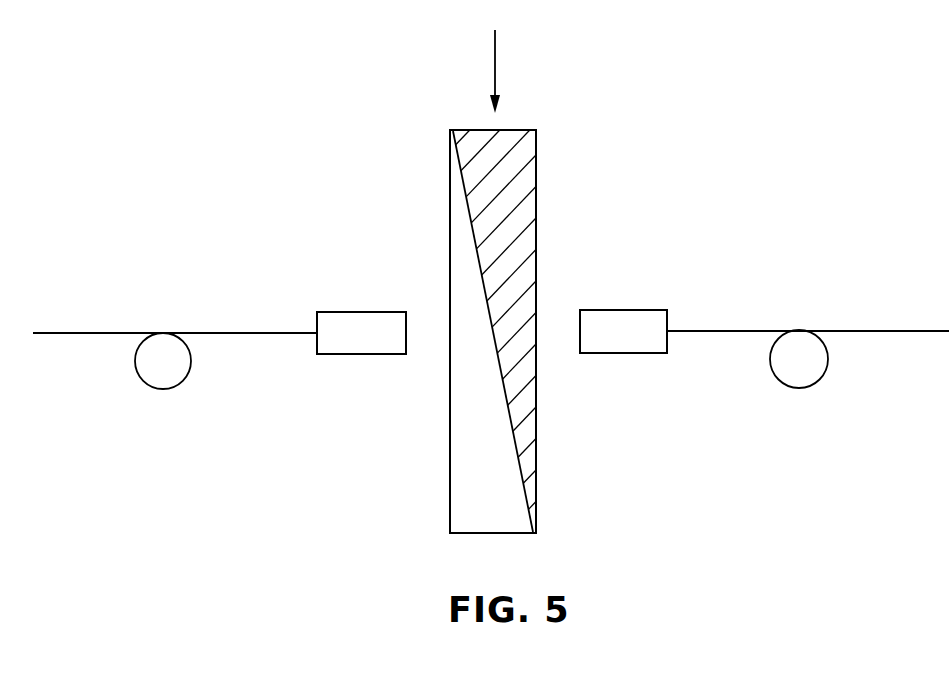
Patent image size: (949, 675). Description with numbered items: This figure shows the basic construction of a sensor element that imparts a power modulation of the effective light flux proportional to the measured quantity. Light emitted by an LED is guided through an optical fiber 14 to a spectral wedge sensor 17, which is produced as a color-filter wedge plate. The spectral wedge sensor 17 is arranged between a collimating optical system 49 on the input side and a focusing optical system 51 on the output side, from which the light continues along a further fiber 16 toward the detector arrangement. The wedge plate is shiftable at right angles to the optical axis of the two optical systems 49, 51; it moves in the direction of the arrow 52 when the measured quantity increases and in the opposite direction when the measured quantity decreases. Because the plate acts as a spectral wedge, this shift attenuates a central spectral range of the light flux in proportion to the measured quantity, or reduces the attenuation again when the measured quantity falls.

The optical fiber 14 is at (252, 332).
The second film strip 16 is at (733, 330).
The spectral wedge sensor 17 is at (538, 194).
The collimating optical system 49 is at (357, 322).
The focusing optical system 51 is at (627, 322).
The arrow 52 is at (495, 62).